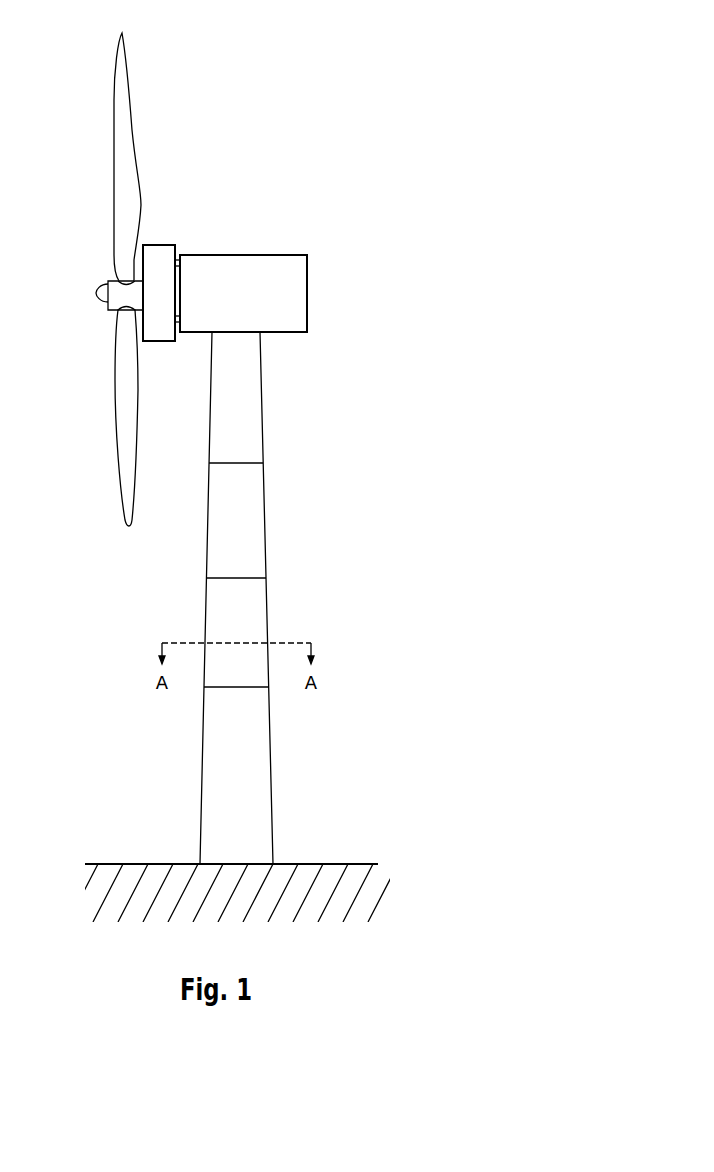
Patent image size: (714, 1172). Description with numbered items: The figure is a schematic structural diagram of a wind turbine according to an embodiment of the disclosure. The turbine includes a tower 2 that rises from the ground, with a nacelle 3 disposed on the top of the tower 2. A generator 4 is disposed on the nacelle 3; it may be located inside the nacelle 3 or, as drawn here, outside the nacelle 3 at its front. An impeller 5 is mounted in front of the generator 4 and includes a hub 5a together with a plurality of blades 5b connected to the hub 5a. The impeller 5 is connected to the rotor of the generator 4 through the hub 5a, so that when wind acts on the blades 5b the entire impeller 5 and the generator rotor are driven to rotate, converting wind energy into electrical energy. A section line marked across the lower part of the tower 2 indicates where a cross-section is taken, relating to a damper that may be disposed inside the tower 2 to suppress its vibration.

The tower 2 is at (272, 758).
The nacelle 3 is at (290, 298).
The generator 4 is at (160, 250).
The impeller 5 is at (81, 279).
The hub 5a is at (120, 283).
The blades 5b is at (117, 218).